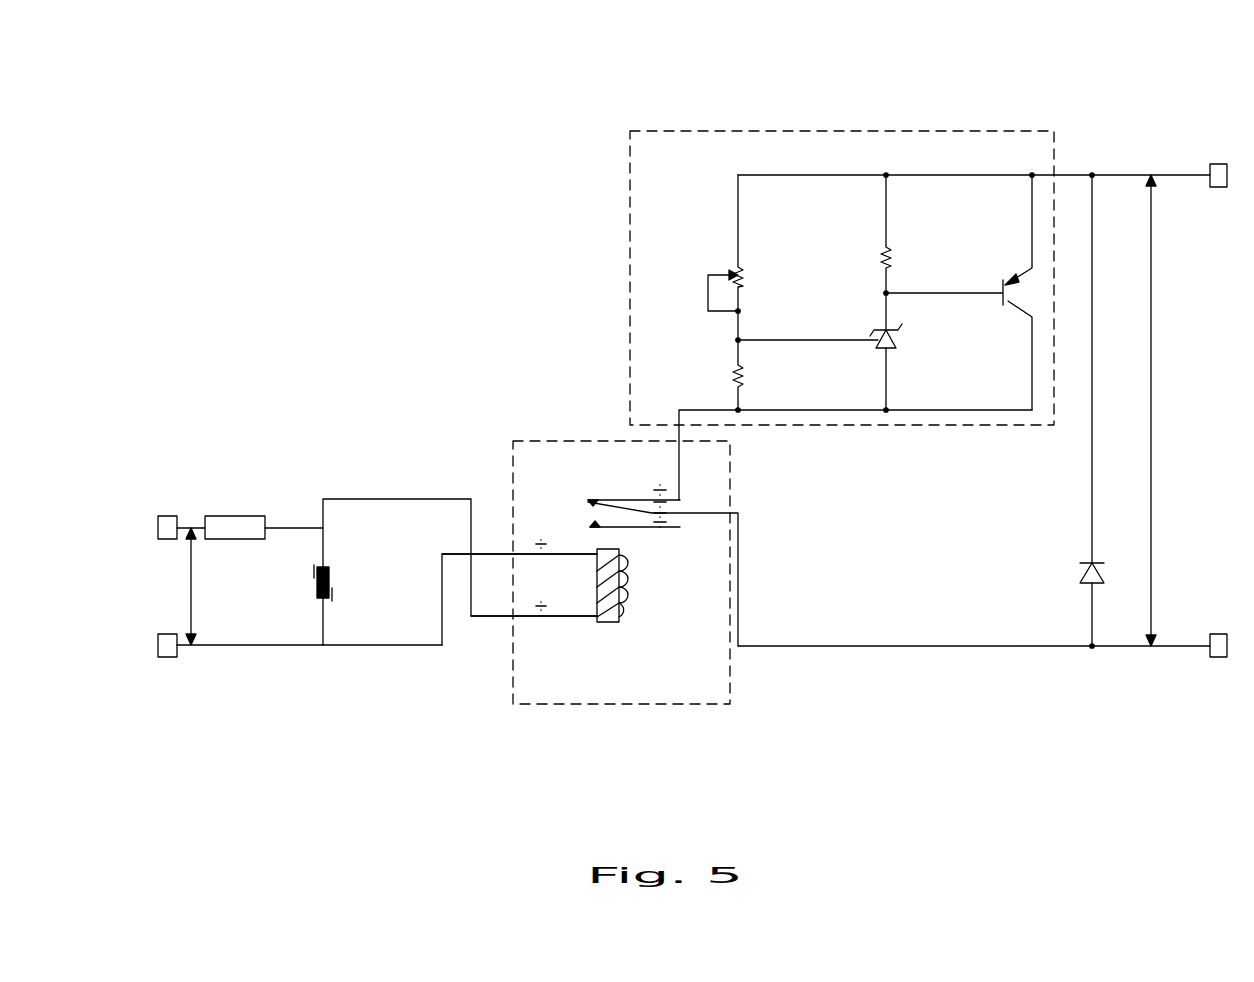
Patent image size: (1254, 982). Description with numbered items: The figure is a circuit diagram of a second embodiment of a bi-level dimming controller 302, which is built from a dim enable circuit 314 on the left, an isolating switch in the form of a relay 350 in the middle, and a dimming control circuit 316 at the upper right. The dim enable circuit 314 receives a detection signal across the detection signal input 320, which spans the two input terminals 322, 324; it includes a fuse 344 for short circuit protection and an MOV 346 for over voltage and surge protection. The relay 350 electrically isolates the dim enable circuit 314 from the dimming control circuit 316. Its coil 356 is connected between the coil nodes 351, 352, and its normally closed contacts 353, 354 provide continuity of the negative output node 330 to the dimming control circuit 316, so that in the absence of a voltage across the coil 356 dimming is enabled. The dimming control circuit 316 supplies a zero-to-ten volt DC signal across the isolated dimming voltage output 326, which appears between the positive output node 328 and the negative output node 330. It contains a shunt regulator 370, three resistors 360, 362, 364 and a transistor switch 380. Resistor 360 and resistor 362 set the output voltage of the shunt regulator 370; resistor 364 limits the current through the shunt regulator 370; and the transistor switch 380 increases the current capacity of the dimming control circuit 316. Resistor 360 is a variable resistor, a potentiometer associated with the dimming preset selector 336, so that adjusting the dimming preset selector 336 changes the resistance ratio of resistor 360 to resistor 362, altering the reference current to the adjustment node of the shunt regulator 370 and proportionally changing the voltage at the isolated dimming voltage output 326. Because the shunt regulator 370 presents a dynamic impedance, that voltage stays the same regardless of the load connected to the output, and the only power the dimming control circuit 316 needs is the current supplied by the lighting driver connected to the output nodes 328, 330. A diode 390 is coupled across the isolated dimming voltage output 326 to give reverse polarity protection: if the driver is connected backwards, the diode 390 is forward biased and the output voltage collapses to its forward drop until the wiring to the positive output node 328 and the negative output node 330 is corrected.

The dimming controller 302 is at (826, 56).
The dim enable circuit 314 is at (296, 384).
The dimming control circuit 316 is at (737, 131).
The detection signal input 320 is at (193, 583).
The input terminal 322 is at (167, 515).
The input terminal 324 is at (167, 633).
The isolated dimming voltage output 326 is at (1153, 372).
The positive output node 328 is at (1218, 163).
The negative output node 330 is at (1218, 658).
The dimming preset selector 336 is at (737, 267).
The fuse 344 is at (235, 516).
The MOV 346 is at (330, 583).
The relay 350 is at (665, 704).
The coil node 351 is at (525, 616).
The coil node 352 is at (525, 554).
The normally closed contact 353 is at (632, 499).
The normally closed contact 354 is at (718, 514).
The coil 356 is at (607, 622).
The resistor 360 is at (822, 175).
The resistor 362 is at (737, 375).
The resistor 364 is at (884, 247).
The shunt regulator 370 is at (880, 332).
The transistor switch 380 is at (1000, 284).
The diode 390 is at (1080, 573).